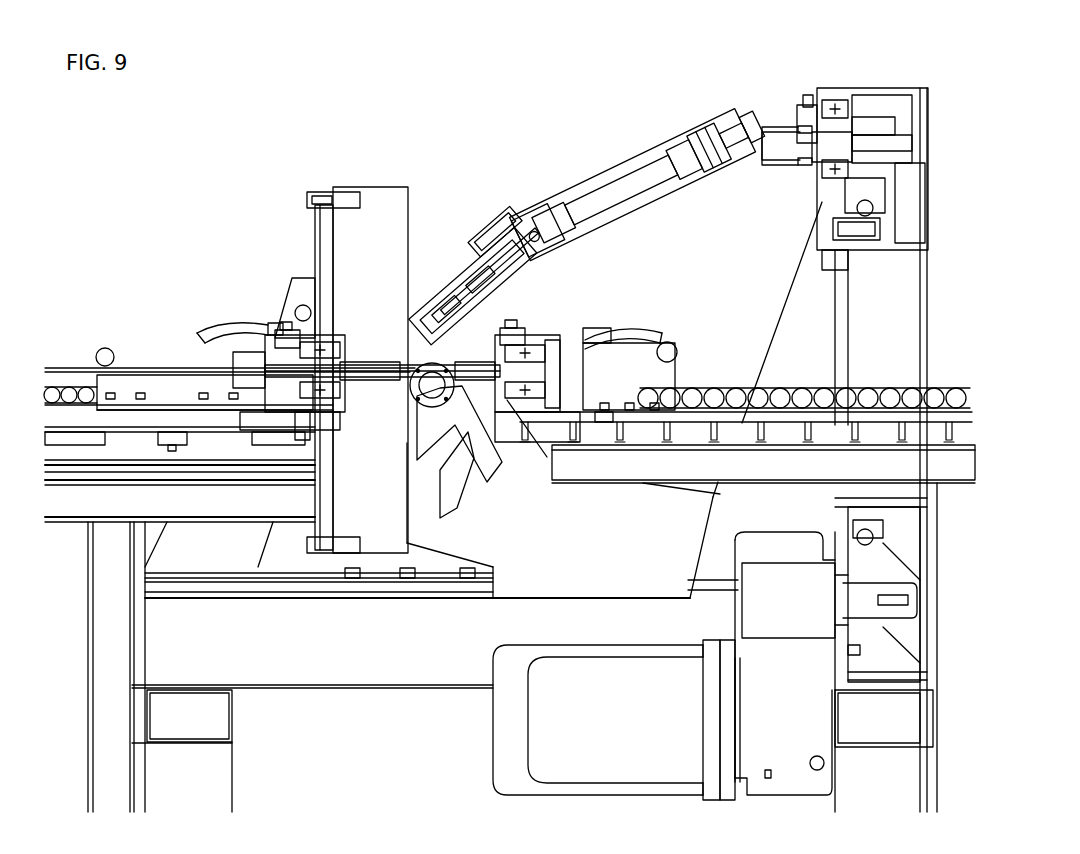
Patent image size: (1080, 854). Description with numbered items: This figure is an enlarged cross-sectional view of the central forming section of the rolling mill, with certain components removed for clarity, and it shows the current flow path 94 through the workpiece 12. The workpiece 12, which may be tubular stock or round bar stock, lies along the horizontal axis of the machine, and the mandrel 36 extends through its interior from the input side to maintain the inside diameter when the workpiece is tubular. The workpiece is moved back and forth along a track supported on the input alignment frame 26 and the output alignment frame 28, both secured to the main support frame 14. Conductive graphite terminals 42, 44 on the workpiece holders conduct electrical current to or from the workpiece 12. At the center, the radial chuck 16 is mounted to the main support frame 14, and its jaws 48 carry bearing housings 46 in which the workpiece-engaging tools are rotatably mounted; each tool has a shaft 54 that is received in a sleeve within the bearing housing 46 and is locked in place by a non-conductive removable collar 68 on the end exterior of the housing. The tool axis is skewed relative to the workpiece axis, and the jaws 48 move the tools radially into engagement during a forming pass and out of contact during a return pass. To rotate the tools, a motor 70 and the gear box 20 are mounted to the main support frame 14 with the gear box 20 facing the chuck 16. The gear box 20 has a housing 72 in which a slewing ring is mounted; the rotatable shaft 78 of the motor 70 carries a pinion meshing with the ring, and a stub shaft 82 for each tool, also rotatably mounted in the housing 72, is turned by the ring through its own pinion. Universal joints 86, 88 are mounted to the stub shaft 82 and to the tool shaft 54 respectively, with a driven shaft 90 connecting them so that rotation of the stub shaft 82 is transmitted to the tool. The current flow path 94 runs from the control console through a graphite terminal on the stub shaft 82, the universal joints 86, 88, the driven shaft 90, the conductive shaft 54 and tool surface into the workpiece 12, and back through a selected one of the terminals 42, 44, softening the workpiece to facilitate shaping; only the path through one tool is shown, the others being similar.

The workpiece 12 is at (383, 356).
The main support frame 14 is at (373, 663).
The radial chuck 16 is at (375, 200).
The gear box 20 is at (883, 92).
The input alignment frame 26 is at (60, 388).
The output alignment frame 28 is at (970, 440).
The mandrel 36 is at (147, 363).
The conductive terminal 42 is at (268, 340).
The conductive terminal 44 is at (560, 337).
The bearing housing 46 is at (445, 305).
The jaw 48 is at (488, 462).
The shaft 54 is at (498, 265).
The removable collar 68 is at (478, 270).
The motor 70 is at (632, 731).
The housing 72 is at (922, 318).
The rotatable shaft 78 is at (903, 590).
The stub shaft 82 is at (890, 150).
The universal joint 86 is at (728, 170).
The universal joint 88 is at (555, 250).
The driven shaft 90 is at (667, 200).
The current flow path 94 is at (632, 160).